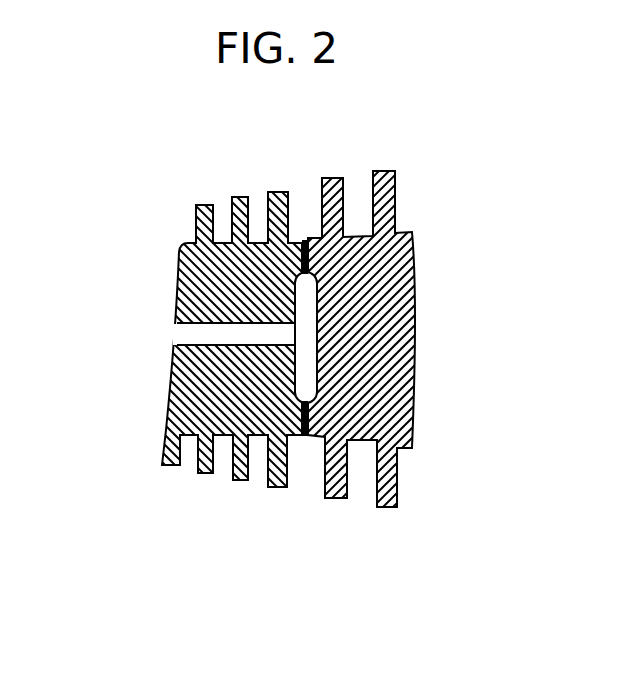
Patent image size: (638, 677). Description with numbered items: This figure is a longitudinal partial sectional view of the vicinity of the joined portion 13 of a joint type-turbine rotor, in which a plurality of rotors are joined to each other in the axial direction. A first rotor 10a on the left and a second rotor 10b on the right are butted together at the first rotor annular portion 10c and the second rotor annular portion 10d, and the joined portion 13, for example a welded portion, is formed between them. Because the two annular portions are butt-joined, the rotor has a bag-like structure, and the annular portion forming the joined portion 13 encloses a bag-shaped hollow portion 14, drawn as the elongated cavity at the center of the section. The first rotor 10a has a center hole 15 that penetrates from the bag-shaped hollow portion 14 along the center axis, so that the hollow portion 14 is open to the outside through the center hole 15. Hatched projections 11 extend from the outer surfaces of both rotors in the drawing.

The first rotor 10a is at (162, 281).
The second rotor 10b is at (434, 267).
The first rotor annular portion 10c is at (312, 250).
The second rotor annular portion 10d is at (303, 412).
The fins 11 is at (240, 482).
The joined portion 13 is at (305, 243).
The bag-shaped hollow portion 14 is at (302, 320).
The center hole 15 is at (220, 333).